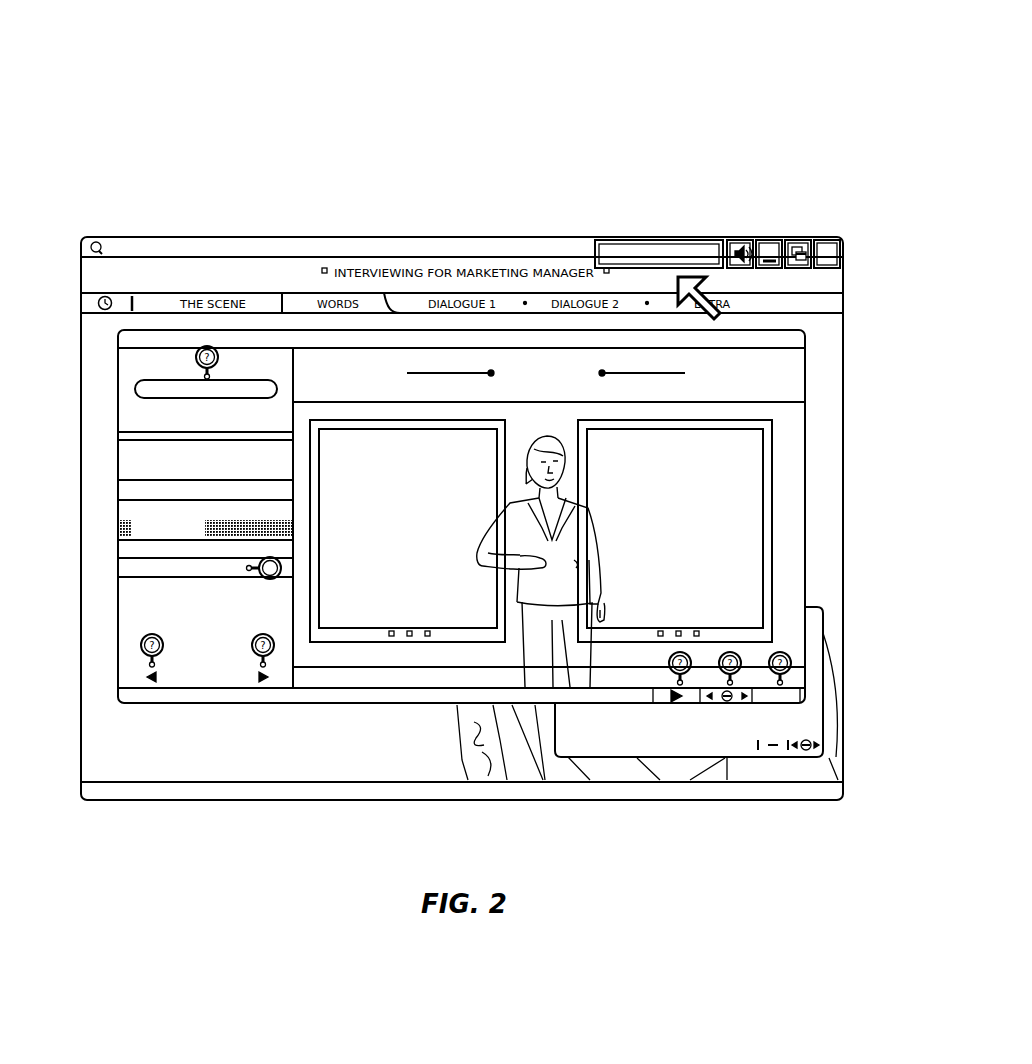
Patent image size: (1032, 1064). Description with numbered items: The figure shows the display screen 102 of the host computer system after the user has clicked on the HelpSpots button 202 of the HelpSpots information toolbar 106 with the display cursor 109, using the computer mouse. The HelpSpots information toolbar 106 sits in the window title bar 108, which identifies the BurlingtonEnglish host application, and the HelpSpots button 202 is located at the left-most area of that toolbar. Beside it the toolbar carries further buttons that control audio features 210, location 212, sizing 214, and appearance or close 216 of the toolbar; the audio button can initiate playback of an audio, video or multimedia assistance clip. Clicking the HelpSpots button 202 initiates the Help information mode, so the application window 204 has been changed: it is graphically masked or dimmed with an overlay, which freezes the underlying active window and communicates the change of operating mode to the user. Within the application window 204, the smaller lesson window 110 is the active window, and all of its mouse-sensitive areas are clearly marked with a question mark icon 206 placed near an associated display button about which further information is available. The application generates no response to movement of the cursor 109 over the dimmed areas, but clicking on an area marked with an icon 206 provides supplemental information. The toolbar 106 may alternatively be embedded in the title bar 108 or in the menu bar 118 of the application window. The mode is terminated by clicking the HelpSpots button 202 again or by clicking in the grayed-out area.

The display screen 102 is at (724, 48).
The HelpSpots information toolbar 106 is at (613, 188).
The window title bar 108 is at (220, 247).
The display cursor 109 is at (718, 318).
The lesson window 110 is at (328, 694).
The menu bar 118 is at (135, 303).
The HelpSpots button 202 is at (653, 237).
The application window 204 is at (775, 788).
The question mark icon 206 is at (703, 658).
The audio button 210 is at (738, 237).
The location button 212 is at (768, 237).
The sizing button 214 is at (792, 237).
The close button 216 is at (828, 237).